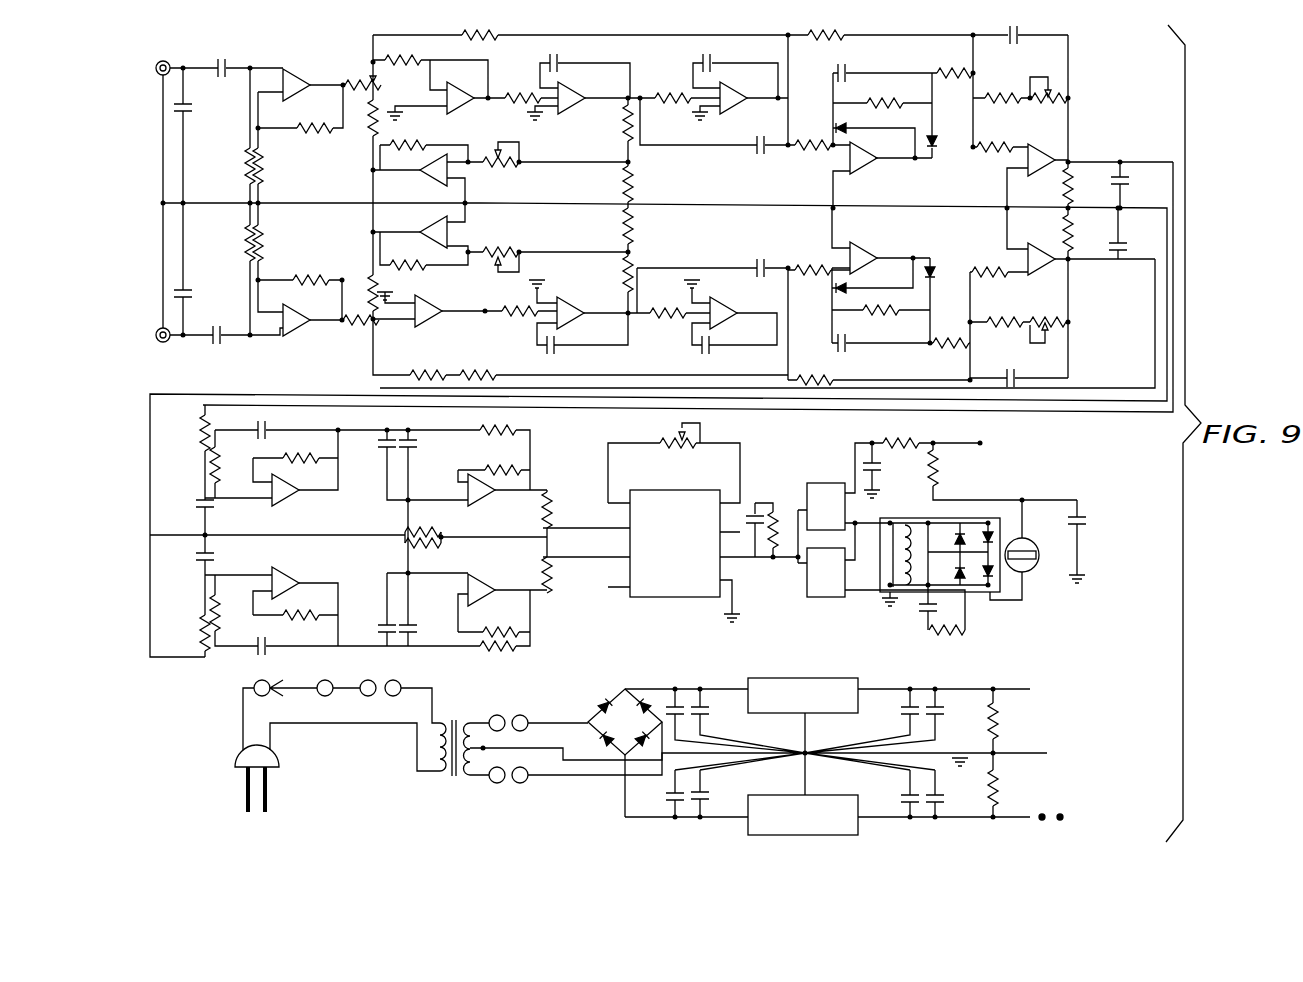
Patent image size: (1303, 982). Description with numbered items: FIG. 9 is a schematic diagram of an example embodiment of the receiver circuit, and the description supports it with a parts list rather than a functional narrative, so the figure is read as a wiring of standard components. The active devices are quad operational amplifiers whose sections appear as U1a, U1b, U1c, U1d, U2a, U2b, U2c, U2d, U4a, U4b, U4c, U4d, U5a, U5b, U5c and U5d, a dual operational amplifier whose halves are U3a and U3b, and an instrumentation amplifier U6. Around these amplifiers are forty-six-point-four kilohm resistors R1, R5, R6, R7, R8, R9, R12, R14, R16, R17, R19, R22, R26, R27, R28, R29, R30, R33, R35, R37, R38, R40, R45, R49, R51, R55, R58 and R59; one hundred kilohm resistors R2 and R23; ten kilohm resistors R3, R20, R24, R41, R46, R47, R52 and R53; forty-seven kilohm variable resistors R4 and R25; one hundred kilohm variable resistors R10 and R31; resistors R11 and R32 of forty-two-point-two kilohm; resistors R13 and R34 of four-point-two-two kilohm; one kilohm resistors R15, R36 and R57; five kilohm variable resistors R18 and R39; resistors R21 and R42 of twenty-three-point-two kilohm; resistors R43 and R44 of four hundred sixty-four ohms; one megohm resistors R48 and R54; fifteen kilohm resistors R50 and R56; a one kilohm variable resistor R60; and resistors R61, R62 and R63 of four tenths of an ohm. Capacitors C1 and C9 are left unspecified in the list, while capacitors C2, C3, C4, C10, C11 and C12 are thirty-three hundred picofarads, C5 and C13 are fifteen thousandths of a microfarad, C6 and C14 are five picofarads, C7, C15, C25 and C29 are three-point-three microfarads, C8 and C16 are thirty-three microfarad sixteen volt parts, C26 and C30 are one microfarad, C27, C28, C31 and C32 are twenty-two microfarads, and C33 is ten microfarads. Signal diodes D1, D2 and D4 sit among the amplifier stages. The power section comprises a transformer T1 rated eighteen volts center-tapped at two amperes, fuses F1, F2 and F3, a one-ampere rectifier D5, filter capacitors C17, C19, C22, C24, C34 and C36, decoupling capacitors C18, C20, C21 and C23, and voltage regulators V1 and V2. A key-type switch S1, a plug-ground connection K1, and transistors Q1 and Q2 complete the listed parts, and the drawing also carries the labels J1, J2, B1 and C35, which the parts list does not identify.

The resistor R1 is at (225, 163).
The resistor R2 is at (299, 138).
The resistor R3 is at (273, 173).
The variable resistor R4 is at (346, 60).
The resistor R5 is at (401, 59).
The resistor R6 is at (480, 46).
The resistor R7 is at (350, 138).
The resistor R8 is at (512, 95).
The resistor R9 is at (665, 95).
The variable resistor R10 is at (524, 172).
The resistor R11 is at (636, 139).
The resistor R12 is at (415, 145).
The resistor R13 is at (635, 186).
The resistor R14 is at (805, 144).
The resistor R15 is at (989, 170).
The resistor R16 is at (875, 104).
The resistor R17 is at (835, 48).
The variable resistor R18 is at (1073, 88).
The resistor R19 is at (997, 96).
The resistor R20 is at (1087, 185).
The resistor R21 is at (930, 60).
The resistor R22 is at (224, 248).
The resistor R23 is at (298, 270).
The resistor R24 is at (273, 234).
The variable resistor R25 is at (349, 344).
The resistor R26 is at (409, 357).
The resistor R27 is at (472, 363).
The resistor R28 is at (350, 273).
The resistor R29 is at (513, 313).
The resistor R30 is at (661, 312).
The variable resistor R31 is at (522, 241).
The resistor R32 is at (634, 267).
The resistor R33 is at (423, 263).
The resistor R34 is at (635, 225).
The resistor R35 is at (805, 251).
The resistor R36 is at (986, 249).
The resistor R37 is at (910, 300).
The resistor R38 is at (832, 369).
The variable resistor R39 is at (1069, 334).
The resistor R40 is at (998, 323).
The resistor R41 is at (1087, 231).
The resistor R42 is at (943, 342).
The resistor R43 is at (1013, 723).
The resistor R44 is at (1013, 785).
The resistor R45 is at (303, 459).
The resistor R46 is at (231, 462).
The resistor R47 is at (186, 435).
The resistor R48 is at (501, 459).
The resistor R49 is at (404, 520).
The resistor R50 is at (487, 420).
The resistor R51 is at (305, 612).
The resistor R52 is at (231, 613).
The resistor R53 is at (186, 627).
The resistor R54 is at (501, 621).
The resistor R55 is at (404, 552).
The resistor R56 is at (487, 657).
The resistor R57 is at (769, 557).
The resistor R58 is at (569, 500).
The resistor R59 is at (569, 586).
The variable resistor R60 is at (674, 456).
The resistor R61 is at (898, 431).
The resistor R62 is at (950, 474).
The resistor R63 is at (916, 626).
The capacitor C1 is at (211, 111).
The capacitor C2 is at (216, 56).
The capacitor C3 is at (573, 53).
The capacitor C4 is at (727, 53).
The capacitor C5 is at (730, 148).
The capacitor C6 is at (823, 83).
The capacitor C7 is at (1029, 48).
The capacitor C8 is at (1123, 148).
The capacitor C9 is at (209, 291).
The capacitor C10 is at (216, 348).
The capacitor C11 is at (573, 354).
The capacitor C12 is at (719, 354).
The capacitor C13 is at (726, 269).
The capacitor C14 is at (820, 342).
The capacitor C15 is at (1020, 369).
The capacitor C16 is at (1121, 274).
The capacitor C17 is at (669, 688).
The capacitor C18 is at (743, 725).
The capacitor C19 is at (665, 802).
The capacitor C20 is at (743, 783).
The capacitor C21 is at (868, 725).
The capacitor C22 is at (953, 696).
The capacitor C23 is at (868, 785).
The capacitor C24 is at (953, 817).
The capacitor C25 is at (272, 422).
The capacitor C26 is at (207, 514).
The capacitor C27 is at (426, 459).
The capacitor C28 is at (371, 459).
The capacitor C29 is at (272, 654).
The capacitor C30 is at (209, 562).
The capacitor C31 is at (428, 614).
The capacitor C32 is at (369, 614).
The capacitor C33 is at (767, 489).
The capacitor C34 is at (897, 471).
The electrolytic capacitor C35 is at (1087, 522).
The capacitor C36 is at (951, 619).
The operational amplifier section U1a is at (447, 98).
The operational amplifier section U1b is at (417, 180).
The operational amplifier section U1c is at (585, 97).
The operational amplifier section U1d is at (742, 99).
The operational amplifier section U2a is at (1039, 160).
The operational amplifier section U2b is at (879, 162).
The operational amplifier section U2c is at (439, 313).
The operational amplifier section U2d is at (419, 227).
The operational amplifier section U3a is at (283, 79).
The operational amplifier section U3b is at (288, 327).
The operational amplifier section U4a is at (585, 312).
The operational amplifier section U4b is at (738, 312).
The operational amplifier section U4c is at (1036, 261).
The operational amplifier section U4d is at (879, 255).
The operational amplifier section U5a is at (499, 510).
The operational amplifier section U5b is at (304, 501).
The operational amplifier section U5c is at (496, 582).
The operational amplifier section U5d is at (308, 568).
The instrumentation amplifier U6 is at (673, 544).
The diode D1 is at (927, 113).
The diode D2 is at (894, 166).
The diode D4 is at (893, 249).
The rectifier diode D5 is at (611, 710).
The input jack J1 is at (160, 55).
The input jack J2 is at (160, 350).
The transistor Q1 is at (820, 482).
The transistor Q2 is at (814, 584).
The plug-ground connection K1 is at (617, 630).
The buzzer B1 is at (1034, 550).
The key-type switch S1 is at (236, 692).
The fuse F1 is at (360, 702).
The fuse F2 is at (503, 709).
The fuse F3 is at (503, 789).
The transformer T1 is at (409, 762).
The voltage regulator V1 is at (804, 686).
The voltage regulator V2 is at (804, 826).